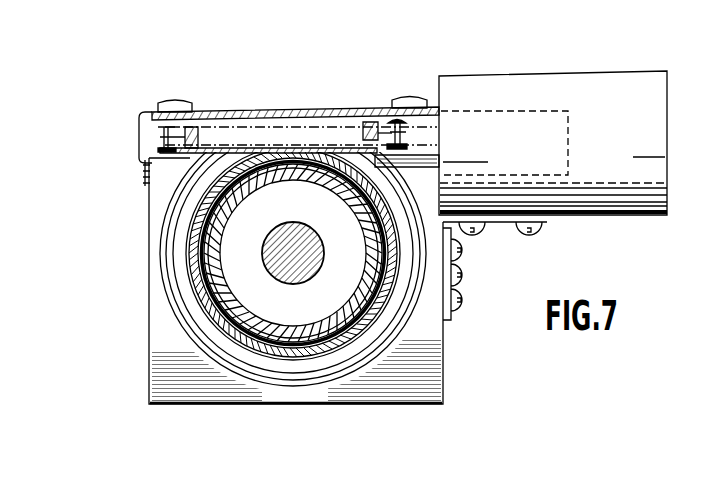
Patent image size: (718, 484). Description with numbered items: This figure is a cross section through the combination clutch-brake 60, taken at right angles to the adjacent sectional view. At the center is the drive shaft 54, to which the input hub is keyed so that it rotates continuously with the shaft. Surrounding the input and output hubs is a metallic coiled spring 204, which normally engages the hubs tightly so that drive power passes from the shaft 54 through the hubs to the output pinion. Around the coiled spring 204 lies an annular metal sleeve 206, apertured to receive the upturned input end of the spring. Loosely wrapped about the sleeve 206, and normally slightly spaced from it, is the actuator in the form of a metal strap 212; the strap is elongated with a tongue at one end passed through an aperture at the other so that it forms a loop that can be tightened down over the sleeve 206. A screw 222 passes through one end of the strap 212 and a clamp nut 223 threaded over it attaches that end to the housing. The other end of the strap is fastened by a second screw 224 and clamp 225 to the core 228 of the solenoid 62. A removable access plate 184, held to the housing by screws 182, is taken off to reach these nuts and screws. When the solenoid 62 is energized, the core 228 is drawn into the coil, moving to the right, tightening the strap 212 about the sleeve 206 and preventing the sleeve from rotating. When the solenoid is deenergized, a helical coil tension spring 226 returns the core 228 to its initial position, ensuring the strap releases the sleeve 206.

The combination clutch-brake 60 is at (157, 78).
The solenoid 62 is at (627, 80).
The drive shaft 54 is at (298, 228).
The screws 182 is at (410, 98).
The removable access plate 184 is at (305, 108).
The coiled spring 204 is at (208, 255).
The annular metal sleeve 206 is at (192, 266).
The actuator strap 212 is at (190, 234).
The screw 222 is at (148, 123).
The clamp nut 223 is at (158, 149).
The second screw 224 is at (410, 118).
The clamp 225 is at (410, 145).
The helical coil tension spring 226 is at (372, 120).
The core 228 is at (428, 157).